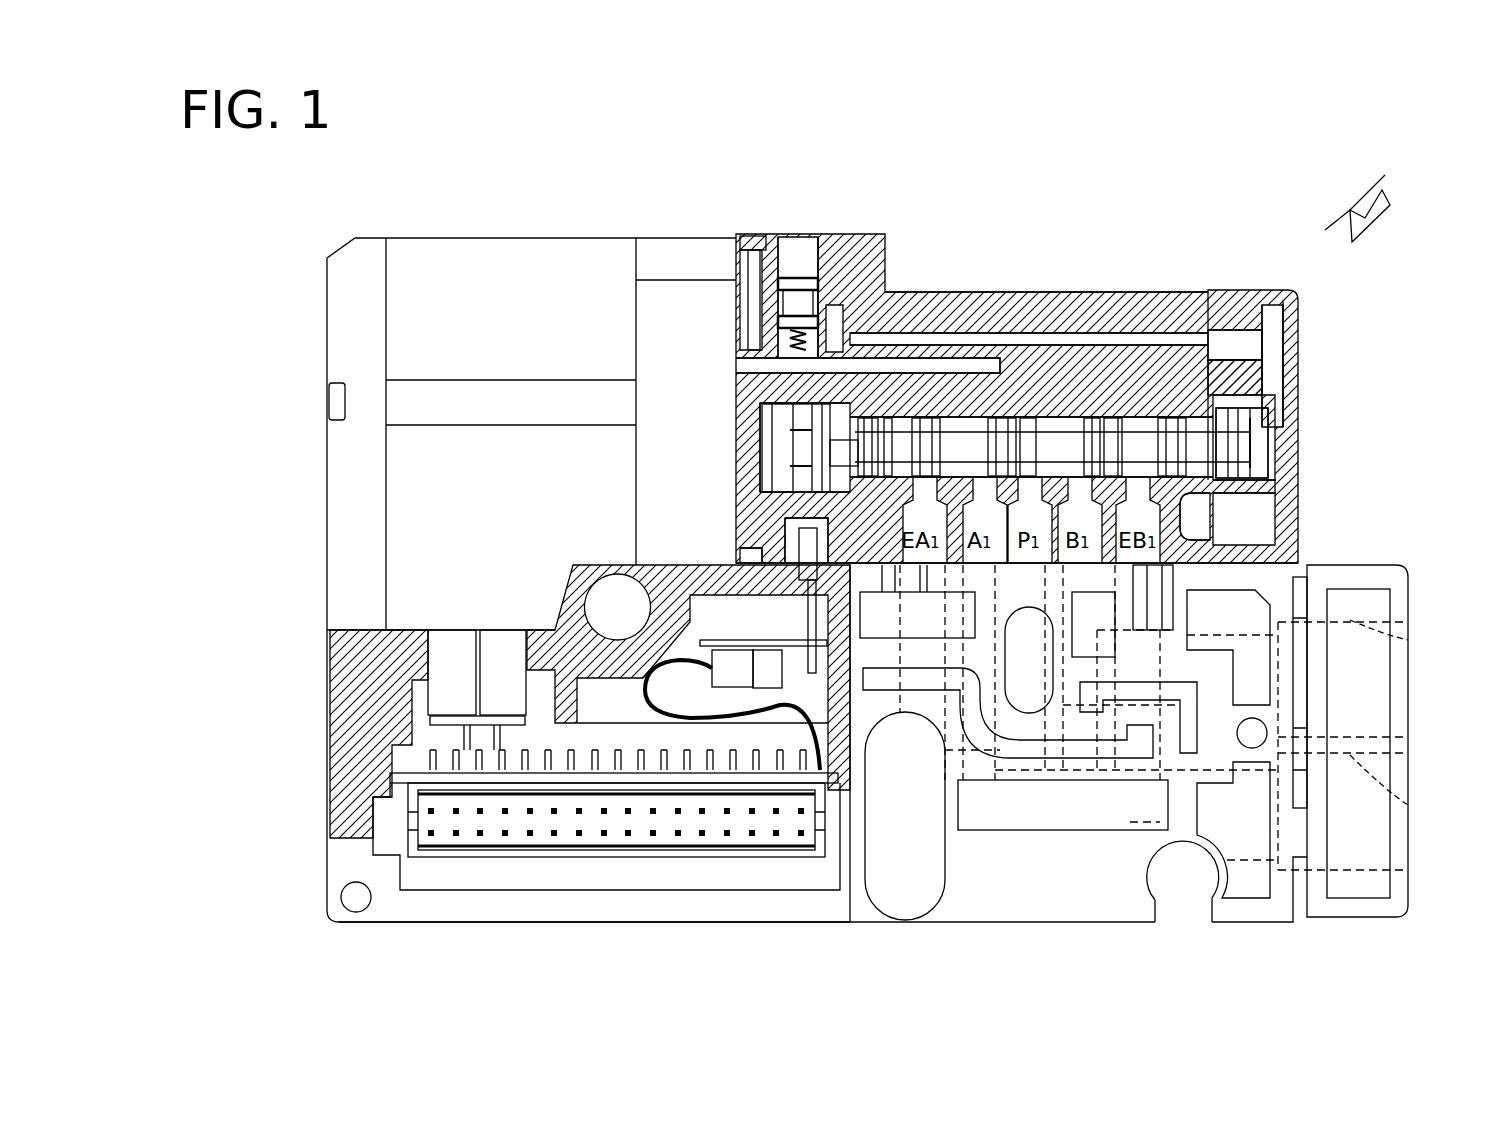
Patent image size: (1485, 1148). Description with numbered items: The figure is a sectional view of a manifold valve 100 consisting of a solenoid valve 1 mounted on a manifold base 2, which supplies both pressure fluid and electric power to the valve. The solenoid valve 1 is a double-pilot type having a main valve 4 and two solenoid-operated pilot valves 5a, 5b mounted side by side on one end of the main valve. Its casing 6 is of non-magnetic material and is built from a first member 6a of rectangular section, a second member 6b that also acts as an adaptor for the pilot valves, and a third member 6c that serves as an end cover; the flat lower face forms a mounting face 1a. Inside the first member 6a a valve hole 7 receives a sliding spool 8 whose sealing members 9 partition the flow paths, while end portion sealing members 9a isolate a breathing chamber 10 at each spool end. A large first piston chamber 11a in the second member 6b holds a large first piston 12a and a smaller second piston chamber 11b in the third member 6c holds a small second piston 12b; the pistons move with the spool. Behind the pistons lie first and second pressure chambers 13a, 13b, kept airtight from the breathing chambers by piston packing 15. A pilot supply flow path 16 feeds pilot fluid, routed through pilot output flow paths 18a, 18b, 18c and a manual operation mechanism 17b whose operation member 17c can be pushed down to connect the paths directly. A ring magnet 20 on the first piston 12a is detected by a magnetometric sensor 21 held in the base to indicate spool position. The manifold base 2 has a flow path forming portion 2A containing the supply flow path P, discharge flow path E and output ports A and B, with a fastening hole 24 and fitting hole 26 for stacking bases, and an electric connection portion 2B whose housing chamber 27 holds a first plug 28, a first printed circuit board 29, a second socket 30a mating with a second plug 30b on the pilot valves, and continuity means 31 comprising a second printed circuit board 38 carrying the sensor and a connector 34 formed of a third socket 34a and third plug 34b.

The manifold valve 100 is at (1373, 201).
The solenoid valve 1 is at (995, 233).
The mounting face 1a is at (1205, 538).
The manifold base 2 is at (1386, 553).
The flow path forming portion 2A is at (1058, 934).
The electric connection portion 2B is at (614, 932).
The main valve 4 is at (1105, 247).
The pilot valve 5a is at (482, 400).
The pilot valve 5b is at (337, 401).
The casing 6 is at (1170, 330).
The first member 6a is at (1055, 294).
The second member 6b is at (835, 258).
The third member 6c is at (1248, 300).
The valve hole 7 is at (1088, 470).
The spool 8 is at (948, 470).
The sealing members 9 is at (1115, 465).
The end portion sealing member 9a is at (888, 372).
The breathing chamber 10 is at (1248, 378).
The first piston chamber 11a is at (752, 516).
The second piston chamber 11b is at (1272, 468).
The first piston 12a is at (752, 490).
The second piston 12b is at (1254, 448).
The first pressure chamber 13a is at (782, 412).
The second pressure chamber 13b is at (1270, 430).
The piston packing 15 is at (762, 440).
The pilot supply flow path 16 is at (1005, 340).
The manual operation mechanism 17b is at (808, 224).
The operation member 17c is at (792, 275).
The pilot output flow path 18a is at (750, 470).
The pilot output flow path 18b is at (750, 262).
The pilot output flow path 18c is at (1183, 338).
The magnet 20 is at (752, 372).
The magnetometric sensor 21 is at (795, 546).
The fastening hole 24 is at (1200, 888).
The fitting hole 26 is at (356, 912).
The housing chamber 27 is at (648, 722).
The first plug 28 is at (510, 838).
The first printed circuit board 29 is at (428, 775).
The second socket 30a is at (440, 720).
The second plug 30b is at (447, 690).
The continuity means 31 is at (724, 743).
The connector 34 is at (762, 692).
The third socket 34a is at (768, 660).
The third plug 34b is at (712, 672).
The second printed circuit board 38 is at (676, 588).
The output port A is at (1391, 793).
The output port B is at (1392, 638).
The discharge flow path E is at (922, 870).
The supply flow path P is at (1030, 715).